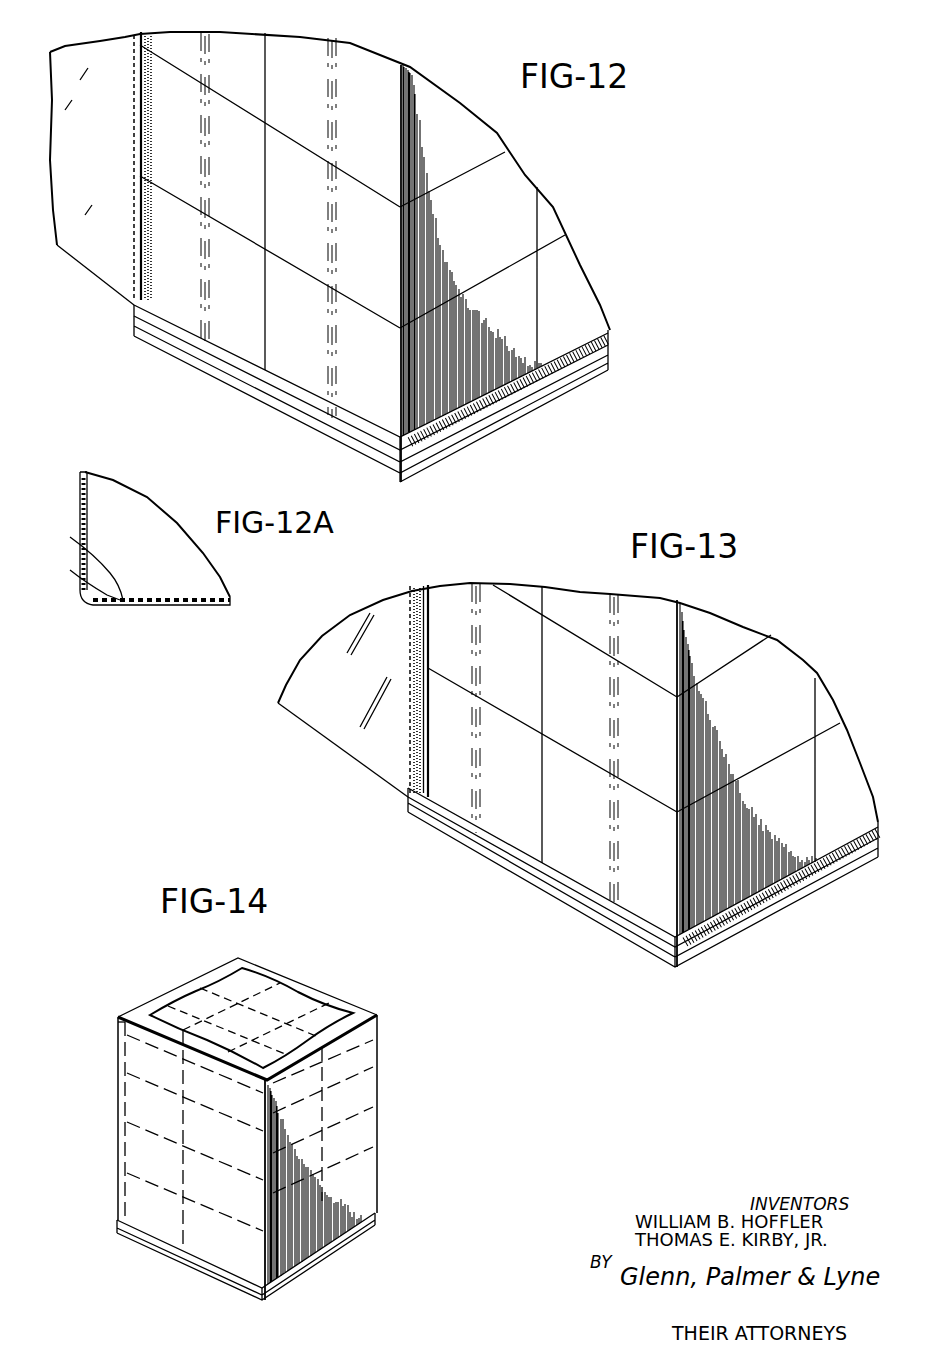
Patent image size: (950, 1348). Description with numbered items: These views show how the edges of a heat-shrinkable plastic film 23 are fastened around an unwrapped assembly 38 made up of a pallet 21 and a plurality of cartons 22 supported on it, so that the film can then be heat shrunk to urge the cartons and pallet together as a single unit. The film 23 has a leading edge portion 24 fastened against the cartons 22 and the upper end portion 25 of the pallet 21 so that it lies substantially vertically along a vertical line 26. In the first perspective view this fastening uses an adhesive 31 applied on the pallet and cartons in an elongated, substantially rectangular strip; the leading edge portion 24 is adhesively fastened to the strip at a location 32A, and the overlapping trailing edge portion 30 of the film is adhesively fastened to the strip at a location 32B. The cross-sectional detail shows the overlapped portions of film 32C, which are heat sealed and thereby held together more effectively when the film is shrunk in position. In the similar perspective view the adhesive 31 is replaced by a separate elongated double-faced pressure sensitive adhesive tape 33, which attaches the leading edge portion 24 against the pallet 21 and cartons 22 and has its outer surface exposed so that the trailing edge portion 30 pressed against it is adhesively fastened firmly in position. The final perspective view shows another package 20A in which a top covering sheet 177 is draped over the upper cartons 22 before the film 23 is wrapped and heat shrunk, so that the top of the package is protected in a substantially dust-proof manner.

In FIG. 14, the package with top covering 20A is at (399, 1114).
In FIG. 12, the pallet 21 is at (380, 457).
In FIG. 13, the pallet 21 is at (442, 810).
In FIG. 14, the pallet 21 is at (227, 1277).
In FIG. 12, the cartons 22 is at (277, 360).
In FIG. 12A, the cartons 22 is at (108, 495).
In FIG. 13, the cartons 22 is at (547, 637).
In FIG. 14, the cartons 22 is at (357, 1083).
In FIG. 12, the heat-shrinkable plastic film 23 is at (62, 173).
In FIG. 12A, the heat-shrinkable plastic film 23 is at (80, 490).
In FIG. 13, the heat-shrinkable plastic film 23 is at (295, 703).
In FIG. 14, the heat-shrinkable plastic film 23 is at (378, 1040).
In FIG. 12, the leading edge portion 24 is at (133, 252).
In FIG. 12A, the leading edge portion 24 is at (70, 537).
In FIG. 13, the leading edge portion 24 is at (410, 738).
In FIG. 14, the leading edge portion 24 is at (123, 1040).
In FIG. 12, the upper end portion of the pallet 25 is at (153, 308).
In FIG. 13, the upper end portion of the pallet 25 is at (638, 922).
In FIG. 14, the upper end portion of the pallet 25 is at (150, 1240).
In FIG. 12, the vertical line 26 is at (144, 140).
In FIG. 13, the vertical line 26 is at (412, 616).
In FIG. 12A, the trailing edge portion 30 is at (100, 606).
In FIG. 14, the trailing edge portion 30 is at (122, 1085).
In FIG. 12, the adhesive 31 is at (143, 167).
In FIG. 12A, the adhesive 31 is at (137, 597).
In FIG. 12, the fastening of leading edge portion to strip 32A is at (133, 270).
In FIG. 12A, the fastening of leading edge portion to strip 32A is at (70, 570).
In FIG. 12, the fastening of trailing edge portion to strip 32B is at (147, 273).
In FIG. 12A, the fastening of trailing edge portion to strip 32B is at (142, 597).
In FIG. 12A, the overlapped portions of film 32C is at (117, 604).
In FIG. 13, the double-faced pressure sensitive adhesive tape 33 is at (417, 767).
In FIG. 12, the unwrapped assembly 38 is at (585, 207).
In FIG. 13, the unwrapped assembly 38 is at (748, 604).
In FIG. 14, the sheet 177 is at (317, 1020).